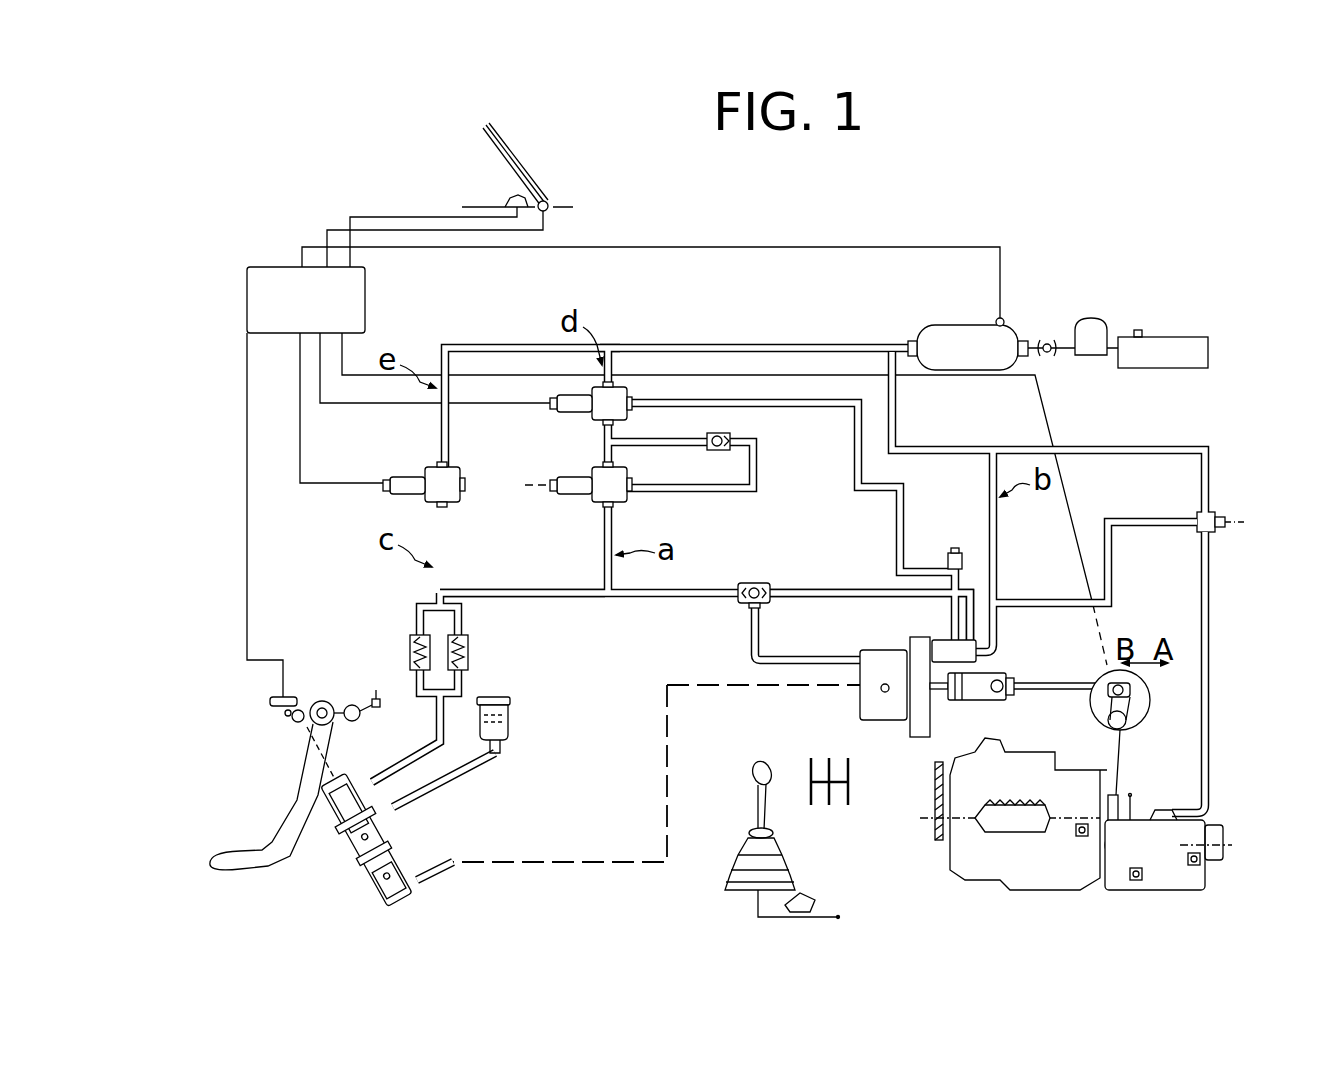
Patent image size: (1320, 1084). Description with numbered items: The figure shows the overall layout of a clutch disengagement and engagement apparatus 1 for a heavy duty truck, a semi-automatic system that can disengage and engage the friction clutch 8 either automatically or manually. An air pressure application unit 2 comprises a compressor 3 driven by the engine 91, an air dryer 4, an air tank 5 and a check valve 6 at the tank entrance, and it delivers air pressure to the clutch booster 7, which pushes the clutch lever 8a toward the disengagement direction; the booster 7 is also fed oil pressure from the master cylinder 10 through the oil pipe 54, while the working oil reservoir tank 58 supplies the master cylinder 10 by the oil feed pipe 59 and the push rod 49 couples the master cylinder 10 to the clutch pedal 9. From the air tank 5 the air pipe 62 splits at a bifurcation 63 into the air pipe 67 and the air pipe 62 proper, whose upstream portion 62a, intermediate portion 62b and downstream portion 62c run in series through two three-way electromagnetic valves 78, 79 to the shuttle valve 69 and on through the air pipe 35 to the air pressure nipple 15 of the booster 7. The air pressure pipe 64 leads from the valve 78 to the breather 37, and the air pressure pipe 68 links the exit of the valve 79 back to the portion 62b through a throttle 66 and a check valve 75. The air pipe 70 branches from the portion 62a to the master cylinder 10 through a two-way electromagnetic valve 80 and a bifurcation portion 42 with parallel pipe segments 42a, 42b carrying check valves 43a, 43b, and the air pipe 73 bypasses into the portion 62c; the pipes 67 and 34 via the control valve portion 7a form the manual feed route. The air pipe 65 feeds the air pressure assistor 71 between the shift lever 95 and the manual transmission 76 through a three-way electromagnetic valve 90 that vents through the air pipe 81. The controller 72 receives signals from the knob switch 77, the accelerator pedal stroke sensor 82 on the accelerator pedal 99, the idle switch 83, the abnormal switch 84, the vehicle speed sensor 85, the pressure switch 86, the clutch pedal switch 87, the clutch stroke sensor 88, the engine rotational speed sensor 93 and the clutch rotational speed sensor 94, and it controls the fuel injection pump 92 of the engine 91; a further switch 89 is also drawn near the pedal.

The clutch disengagement and engagement apparatus 1 is at (962, 218).
The air pressure application unit 2 is at (1076, 290).
The compressor 3 is at (1180, 345).
The air dryer 4 is at (1092, 322).
The air tank 5 is at (963, 330).
The check valve 6 is at (1048, 338).
The clutch booster 7 is at (885, 735).
The control valve portion 7a is at (985, 665).
The friction clutch 8 is at (1108, 795).
The clutch lever 8a is at (1100, 722).
The clutch pedal 9 is at (258, 865).
The master cylinder 10 is at (360, 868).
The air pressure nipple 15 is at (855, 655).
The air pipe 34 is at (850, 588).
The air pipe 35 is at (790, 656).
The breather 37 is at (955, 548).
The bifurcation portion 42 is at (400, 598).
The pipe segment 42a is at (416, 622).
The pipe segment 42b is at (462, 622).
The check valve 43a is at (410, 665).
The check valve 43b is at (470, 665).
The push rod 49 is at (352, 778).
The oil pipe 54 is at (667, 800).
The working oil reservoir tank 58 is at (512, 720).
The oil feed pipe 59 is at (450, 792).
The air pipe 62 is at (768, 342).
The upstream portion 62a is at (682, 342).
The intermediate portion 62b is at (605, 445).
The downstream portion 62c is at (605, 563).
The bifurcation 63 is at (880, 356).
The air pressure pipe 64 is at (795, 410).
The air pipe 65 is at (1135, 455).
The throttle 66 is at (668, 490).
The air pipe 67 is at (1000, 530).
The air pressure pipe 68 is at (735, 492).
The shuttle valve 69 is at (745, 612).
The air pipe 70 is at (440, 388).
The air pressure assistor 71 is at (1160, 810).
The controller 72 is at (319, 312).
The air pipe 73 is at (478, 588).
The check valve 75 is at (715, 452).
The manual transmission 76 is at (1160, 810).
The knob switch 77 is at (768, 775).
The three-way electromagnetic valve 78 is at (625, 408).
The three-way electromagnetic valve 79 is at (600, 495).
The two-way electromagnetic valve 80 is at (428, 470).
The air pipe 81 is at (1120, 528).
The accelerator pedal stroke sensor 82 is at (550, 198).
The idle switch 83 is at (505, 198).
The abnormal switch 84 is at (835, 890).
The vehicle speed sensor 85 is at (1200, 868).
The pressure switch 86 is at (1005, 300).
The clutch pedal switch 87 is at (290, 695).
The clutch stroke sensor 88 is at (1090, 678).
The pedal stroke sensor 89 is at (375, 710).
The three-way electromagnetic valve 90 is at (1216, 534).
The engine 91 is at (975, 870).
The fuel injection pump 92 is at (1008, 812).
The engine rotational speed sensor 93 is at (1080, 822).
The clutch rotational speed sensor 94 is at (1138, 882).
The shift lever 95 is at (745, 790).
The accelerator pedal 99 is at (545, 145).